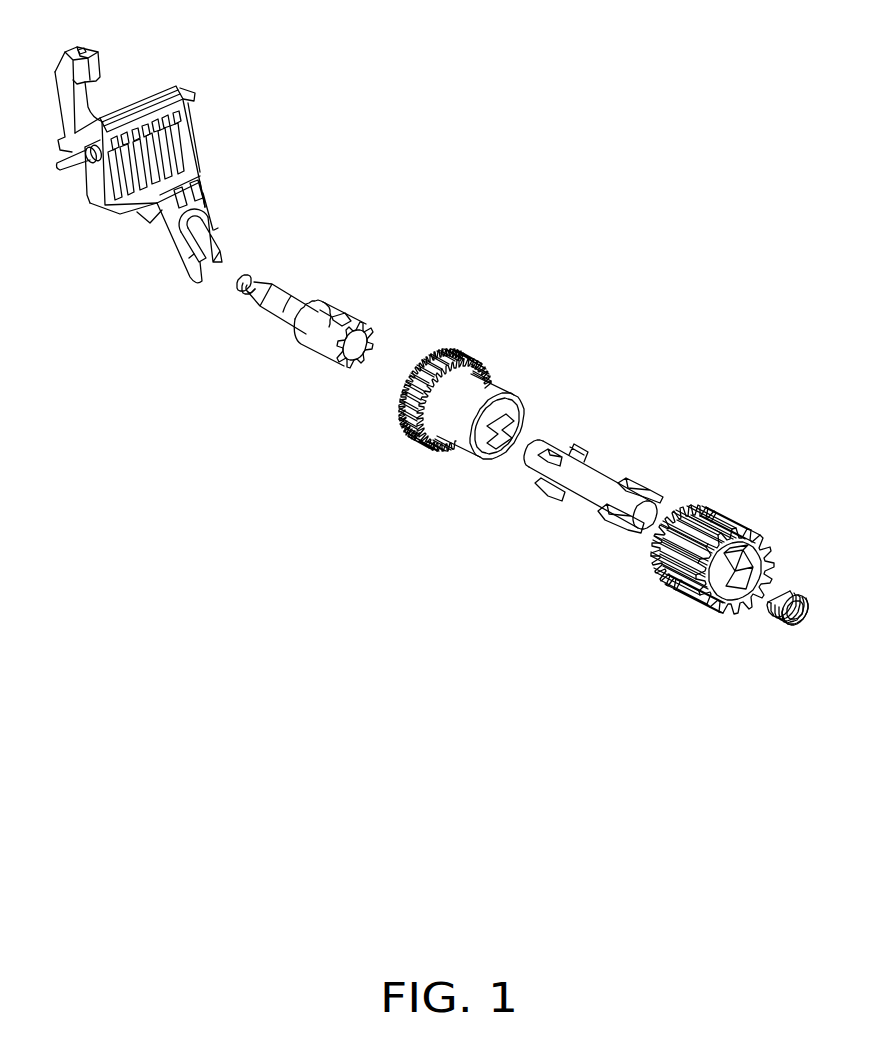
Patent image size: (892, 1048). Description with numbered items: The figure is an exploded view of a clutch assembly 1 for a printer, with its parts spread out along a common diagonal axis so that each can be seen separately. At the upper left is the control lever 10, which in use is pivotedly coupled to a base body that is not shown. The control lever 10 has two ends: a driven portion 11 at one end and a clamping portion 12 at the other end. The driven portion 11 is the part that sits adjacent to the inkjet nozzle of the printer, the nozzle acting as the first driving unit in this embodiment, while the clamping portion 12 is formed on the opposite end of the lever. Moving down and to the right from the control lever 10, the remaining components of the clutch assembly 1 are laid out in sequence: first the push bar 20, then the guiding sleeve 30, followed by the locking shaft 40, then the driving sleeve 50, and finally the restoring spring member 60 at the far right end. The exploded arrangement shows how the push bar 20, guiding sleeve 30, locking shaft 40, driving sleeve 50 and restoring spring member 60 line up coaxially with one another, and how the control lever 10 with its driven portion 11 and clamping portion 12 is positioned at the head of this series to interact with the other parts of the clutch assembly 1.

The clutch assembly 1 is at (478, 165).
The control lever 10 is at (215, 145).
The driven portion 11 is at (95, 62).
The clamping portion 12 is at (178, 270).
The push bar 20 is at (292, 302).
The guiding sleeve 30 is at (484, 392).
The locking shaft 40 is at (590, 478).
The driving sleeve 50 is at (717, 530).
The restoring spring member 60 is at (798, 587).